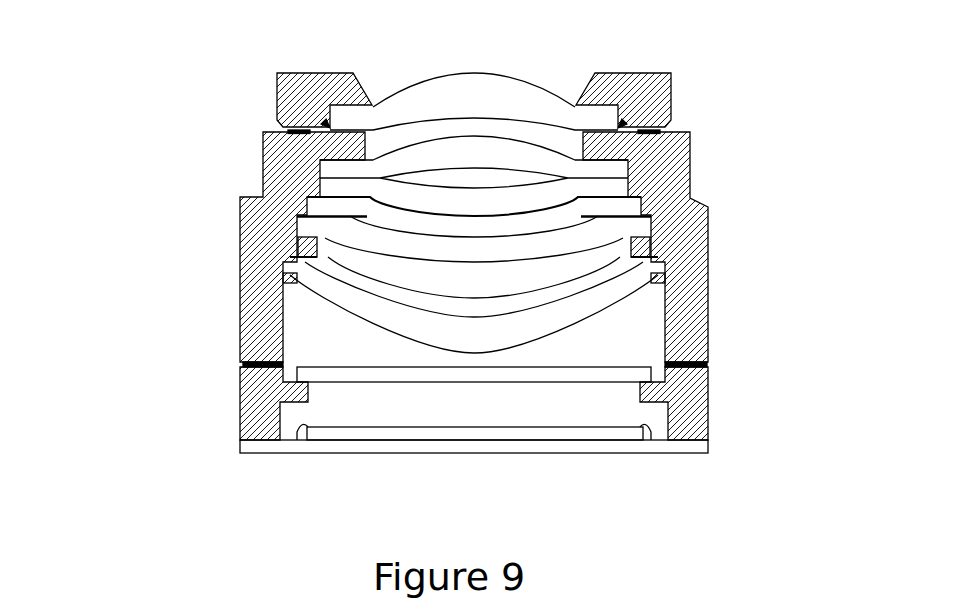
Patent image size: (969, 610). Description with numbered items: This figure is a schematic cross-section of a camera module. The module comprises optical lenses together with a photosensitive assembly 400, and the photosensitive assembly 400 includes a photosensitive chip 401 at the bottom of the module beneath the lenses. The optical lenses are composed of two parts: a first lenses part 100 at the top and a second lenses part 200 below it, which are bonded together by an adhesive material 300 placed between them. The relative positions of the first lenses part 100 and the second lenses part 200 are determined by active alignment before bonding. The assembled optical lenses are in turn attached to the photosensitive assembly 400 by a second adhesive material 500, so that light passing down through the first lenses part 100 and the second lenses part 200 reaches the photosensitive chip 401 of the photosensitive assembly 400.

The first lenses part 100 is at (677, 73).
The adhesive material 300 is at (660, 131).
The second lenses part 200 is at (720, 263).
The photosensitive assembly 400 is at (715, 407).
The second adhesive material 500 is at (243, 364).
The photosensitive chip 401 is at (432, 437).